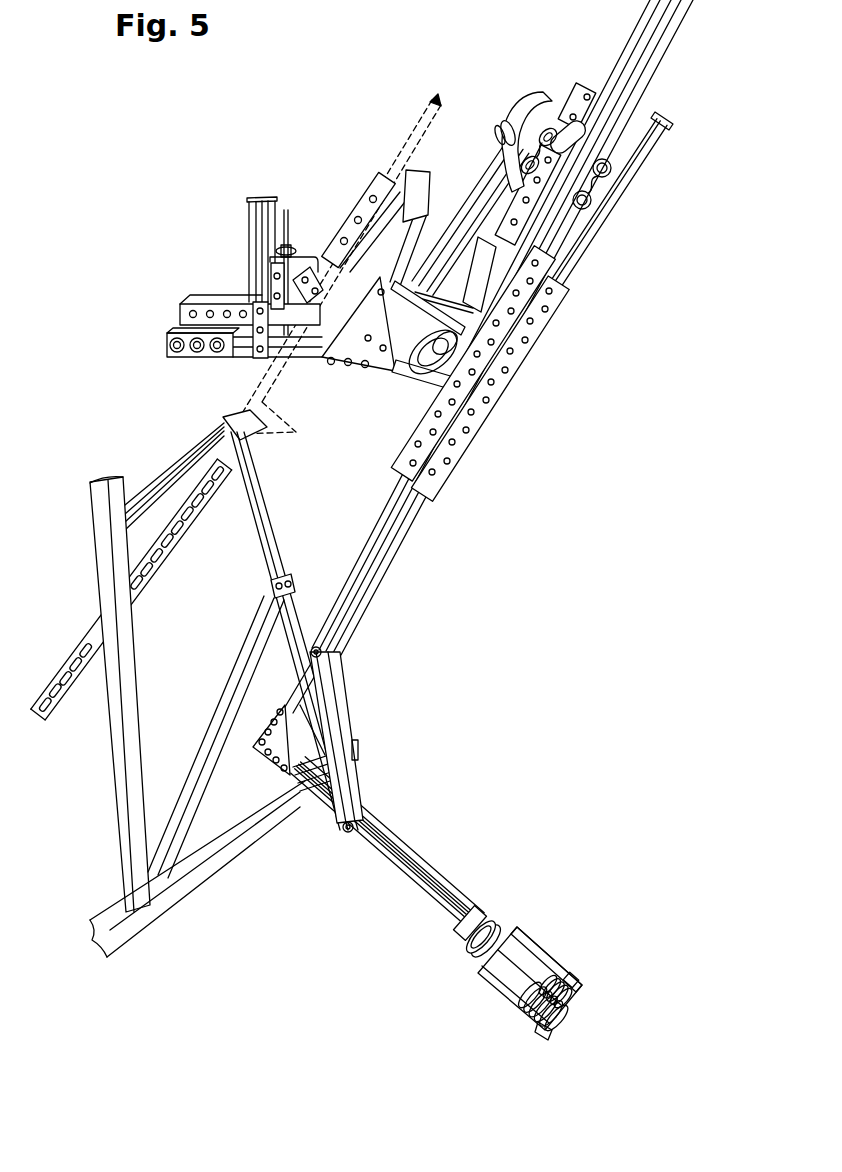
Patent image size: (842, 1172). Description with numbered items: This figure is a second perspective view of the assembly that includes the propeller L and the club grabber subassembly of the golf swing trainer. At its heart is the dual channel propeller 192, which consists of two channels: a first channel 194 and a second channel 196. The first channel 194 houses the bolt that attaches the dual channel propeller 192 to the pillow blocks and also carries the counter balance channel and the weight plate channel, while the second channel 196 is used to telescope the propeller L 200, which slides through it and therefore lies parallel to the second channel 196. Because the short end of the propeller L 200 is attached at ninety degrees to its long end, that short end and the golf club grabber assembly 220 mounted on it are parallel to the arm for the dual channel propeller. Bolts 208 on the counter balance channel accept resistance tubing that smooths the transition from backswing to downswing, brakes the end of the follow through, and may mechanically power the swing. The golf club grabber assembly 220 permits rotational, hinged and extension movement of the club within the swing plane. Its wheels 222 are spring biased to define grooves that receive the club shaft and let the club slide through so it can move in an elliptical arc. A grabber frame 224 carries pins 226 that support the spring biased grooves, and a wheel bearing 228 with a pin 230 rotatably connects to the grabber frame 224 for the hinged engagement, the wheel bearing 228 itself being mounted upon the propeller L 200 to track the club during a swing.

The dual channel propeller 192 is at (505, 374).
The first channel 194 is at (480, 355).
The second channel 196 is at (475, 410).
The propeller L 200 is at (610, 217).
The bolts 208 is at (543, 128).
The golf club grabber assembly 220 is at (559, 1011).
The wheels 222 is at (570, 1007).
The grabber frame 224 is at (550, 953).
The pins 226 is at (527, 1027).
The wheel bearing 228 is at (475, 957).
The pin 230 is at (500, 920).